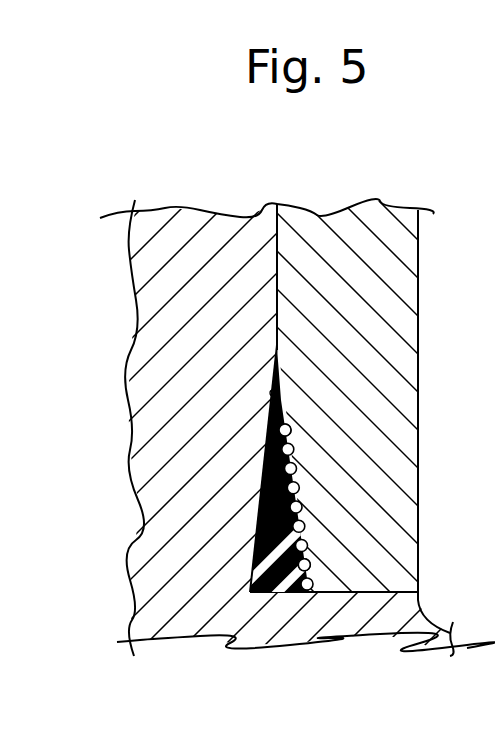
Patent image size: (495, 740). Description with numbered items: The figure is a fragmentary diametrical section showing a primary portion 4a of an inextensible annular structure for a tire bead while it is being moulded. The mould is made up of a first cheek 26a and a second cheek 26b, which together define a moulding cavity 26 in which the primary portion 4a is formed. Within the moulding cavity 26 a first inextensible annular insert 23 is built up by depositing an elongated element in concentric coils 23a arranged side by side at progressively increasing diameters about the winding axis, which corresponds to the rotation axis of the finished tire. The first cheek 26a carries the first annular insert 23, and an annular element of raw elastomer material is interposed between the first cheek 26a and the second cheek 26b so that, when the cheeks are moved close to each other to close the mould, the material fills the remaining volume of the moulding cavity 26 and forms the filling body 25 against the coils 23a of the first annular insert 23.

The primary portion 4a is at (308, 585).
The first inextensible annular insert 23 is at (312, 501).
The concentric coils 23a is at (292, 427).
The filling body 25 is at (270, 492).
The moulding cavity 26 is at (270, 393).
The first cheek 26a is at (375, 214).
The second cheek 26b is at (180, 220).